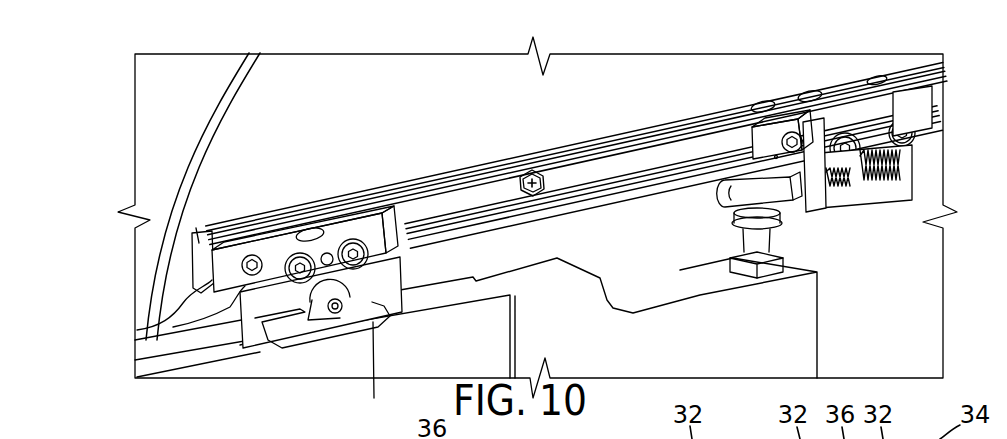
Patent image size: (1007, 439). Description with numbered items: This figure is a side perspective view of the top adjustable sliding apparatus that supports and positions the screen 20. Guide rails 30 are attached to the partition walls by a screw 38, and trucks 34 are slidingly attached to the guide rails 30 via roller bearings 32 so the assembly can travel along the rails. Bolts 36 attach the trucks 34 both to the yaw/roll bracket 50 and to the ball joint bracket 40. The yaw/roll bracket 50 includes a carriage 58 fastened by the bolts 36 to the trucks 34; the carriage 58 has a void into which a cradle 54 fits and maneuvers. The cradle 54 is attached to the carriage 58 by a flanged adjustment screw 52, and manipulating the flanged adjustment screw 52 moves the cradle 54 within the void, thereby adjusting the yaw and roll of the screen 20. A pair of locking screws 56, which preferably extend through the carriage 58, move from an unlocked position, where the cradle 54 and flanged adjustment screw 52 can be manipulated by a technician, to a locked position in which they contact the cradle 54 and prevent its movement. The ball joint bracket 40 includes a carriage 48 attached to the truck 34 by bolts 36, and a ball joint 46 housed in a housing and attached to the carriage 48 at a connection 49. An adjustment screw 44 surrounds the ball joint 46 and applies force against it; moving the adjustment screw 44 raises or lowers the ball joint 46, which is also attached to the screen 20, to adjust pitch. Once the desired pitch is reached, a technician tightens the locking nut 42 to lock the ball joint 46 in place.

The screen 20 is at (278, 360).
The guide rails 30 is at (438, 172).
The roller bearings 32 is at (312, 222).
The trucks 34 is at (382, 223).
The bolts 36 is at (242, 263).
The screw 38 is at (531, 170).
The ball joint bracket 40 is at (856, 80).
The locking nut 42 is at (750, 270).
The adjustment screw 44 is at (783, 216).
The ball joint 46 is at (842, 233).
The carriage 48 is at (924, 180).
The connection 49 is at (858, 200).
The yaw/roll bracket 50 is at (315, 186).
The flanged adjustment screw 52 is at (245, 300).
The cradle 54 is at (312, 352).
The locking screws 56 is at (215, 283).
The carriage 58 is at (232, 348).